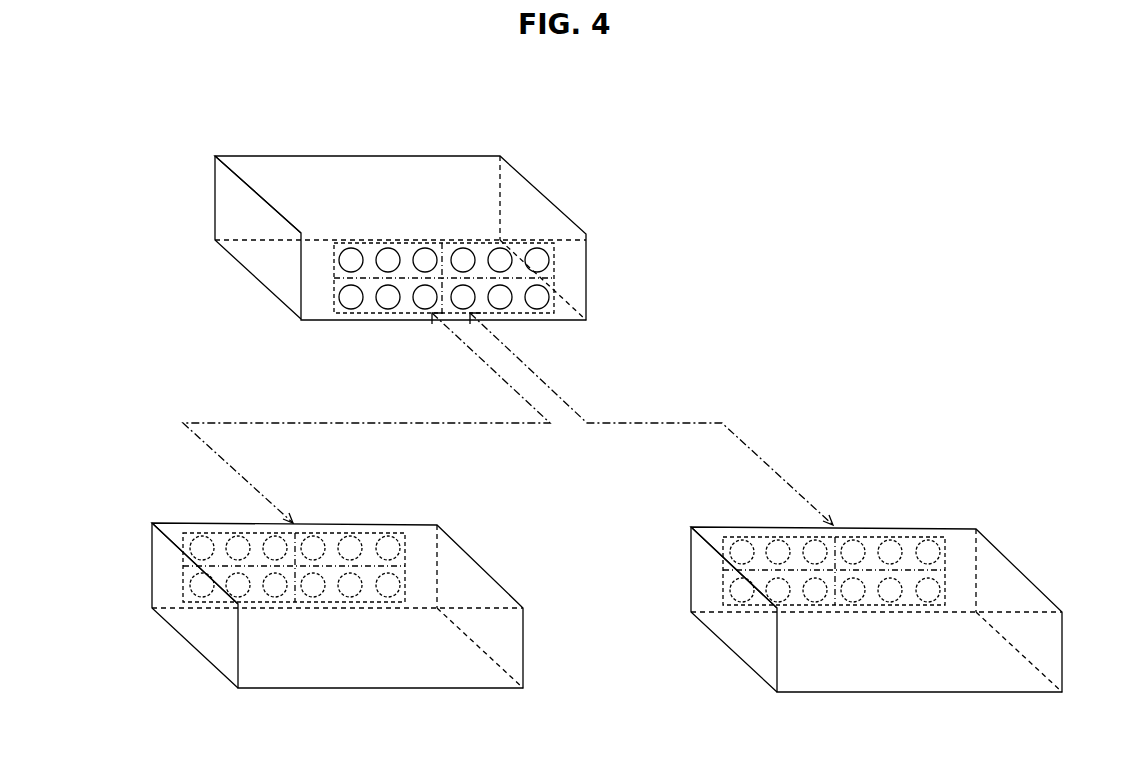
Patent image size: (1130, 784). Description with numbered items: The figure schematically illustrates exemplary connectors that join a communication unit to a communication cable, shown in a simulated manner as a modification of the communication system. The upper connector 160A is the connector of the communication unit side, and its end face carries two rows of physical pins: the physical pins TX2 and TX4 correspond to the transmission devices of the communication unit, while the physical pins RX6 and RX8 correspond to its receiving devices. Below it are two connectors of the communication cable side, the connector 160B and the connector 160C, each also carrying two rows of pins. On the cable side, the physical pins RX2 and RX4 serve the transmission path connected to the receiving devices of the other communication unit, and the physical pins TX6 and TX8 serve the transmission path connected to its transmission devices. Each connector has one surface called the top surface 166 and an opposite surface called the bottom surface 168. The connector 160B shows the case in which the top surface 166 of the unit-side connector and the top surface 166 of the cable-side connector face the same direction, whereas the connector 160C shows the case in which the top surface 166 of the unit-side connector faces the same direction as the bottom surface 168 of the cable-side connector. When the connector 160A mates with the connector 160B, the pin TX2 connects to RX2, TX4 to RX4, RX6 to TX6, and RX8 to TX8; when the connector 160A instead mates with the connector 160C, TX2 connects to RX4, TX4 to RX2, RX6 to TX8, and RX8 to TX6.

The connector of the communication unit side 160A is at (212, 136).
The connector of the communication cable side 160B is at (149, 504).
The connector of the communication cable side 160C is at (689, 508).
The top surface 166 is at (487, 170).
The bottom surface 168 is at (292, 313).
The physical pin TX2 is at (300, 282).
The physical pin TX4 is at (553, 250).
The physical pin TX6 is at (183, 542).
The physical pin TX8 is at (405, 582).
The physical pin RX2 is at (183, 580).
The physical pin RX4 is at (405, 543).
The physical pin RX6 is at (300, 245).
The physical pin RX8 is at (553, 285).